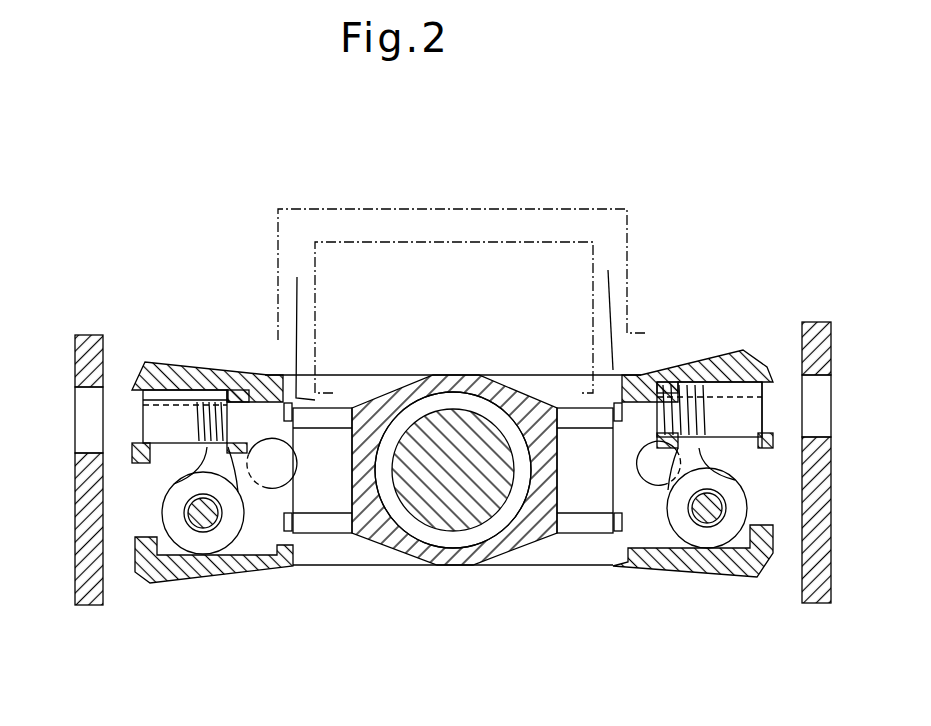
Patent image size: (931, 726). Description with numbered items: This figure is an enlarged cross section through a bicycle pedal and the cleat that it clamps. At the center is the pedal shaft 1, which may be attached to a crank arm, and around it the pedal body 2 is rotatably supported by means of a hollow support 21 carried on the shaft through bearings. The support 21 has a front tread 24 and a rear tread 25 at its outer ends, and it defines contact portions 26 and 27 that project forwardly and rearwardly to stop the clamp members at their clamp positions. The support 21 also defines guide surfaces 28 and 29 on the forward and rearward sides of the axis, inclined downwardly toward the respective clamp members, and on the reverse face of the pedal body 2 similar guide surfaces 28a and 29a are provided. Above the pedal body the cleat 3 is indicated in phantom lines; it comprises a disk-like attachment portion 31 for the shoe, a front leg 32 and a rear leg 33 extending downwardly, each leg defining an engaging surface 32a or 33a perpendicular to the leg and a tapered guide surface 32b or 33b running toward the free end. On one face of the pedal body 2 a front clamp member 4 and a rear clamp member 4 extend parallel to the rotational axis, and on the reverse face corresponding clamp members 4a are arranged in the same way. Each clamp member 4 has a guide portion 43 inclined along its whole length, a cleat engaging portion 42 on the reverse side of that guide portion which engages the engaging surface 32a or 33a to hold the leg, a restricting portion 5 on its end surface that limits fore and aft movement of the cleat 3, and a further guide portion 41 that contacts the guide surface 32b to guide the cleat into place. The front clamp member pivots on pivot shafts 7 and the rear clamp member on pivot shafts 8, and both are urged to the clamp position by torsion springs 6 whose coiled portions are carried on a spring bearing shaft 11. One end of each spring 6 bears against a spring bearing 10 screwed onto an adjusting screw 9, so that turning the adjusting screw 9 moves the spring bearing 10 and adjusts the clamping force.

The pedal shaft 1 is at (433, 520).
The pedal body 2 is at (478, 370).
The cleat 3 is at (383, 205).
The clamp member 4 is at (147, 358).
The clamp member 4a is at (156, 590).
The restricting portion 5 is at (614, 640).
The spring 6 is at (182, 582).
The pivot shaft 7 is at (647, 465).
The pivot shaft 8 is at (262, 467).
The adjusting screw 9 is at (155, 417).
The spring bearing 10 is at (227, 372).
The spring bearing shaft 11 is at (187, 520).
The hollow support 21 is at (462, 373).
The front tread 24 is at (832, 482).
The rear tread 25 is at (78, 480).
The contact portion 26 is at (623, 517).
The contact portion 27 is at (308, 567).
The guide surface 28 is at (513, 393).
The guide surface 28a is at (402, 555).
The guide surface 29 is at (393, 393).
The guide surface 29a is at (507, 553).
The attachment portion 31 is at (543, 207).
The front leg 32 is at (593, 295).
The engaging surface 32a is at (640, 360).
The guide surface 32b is at (652, 362).
The rear leg 33 is at (316, 300).
The engaging surface 33a is at (257, 283).
The guide surface 33b is at (242, 370).
The guide portion 41 is at (262, 393).
The cleat engaging portion 42 is at (300, 405).
The guide portion 43 is at (190, 363).